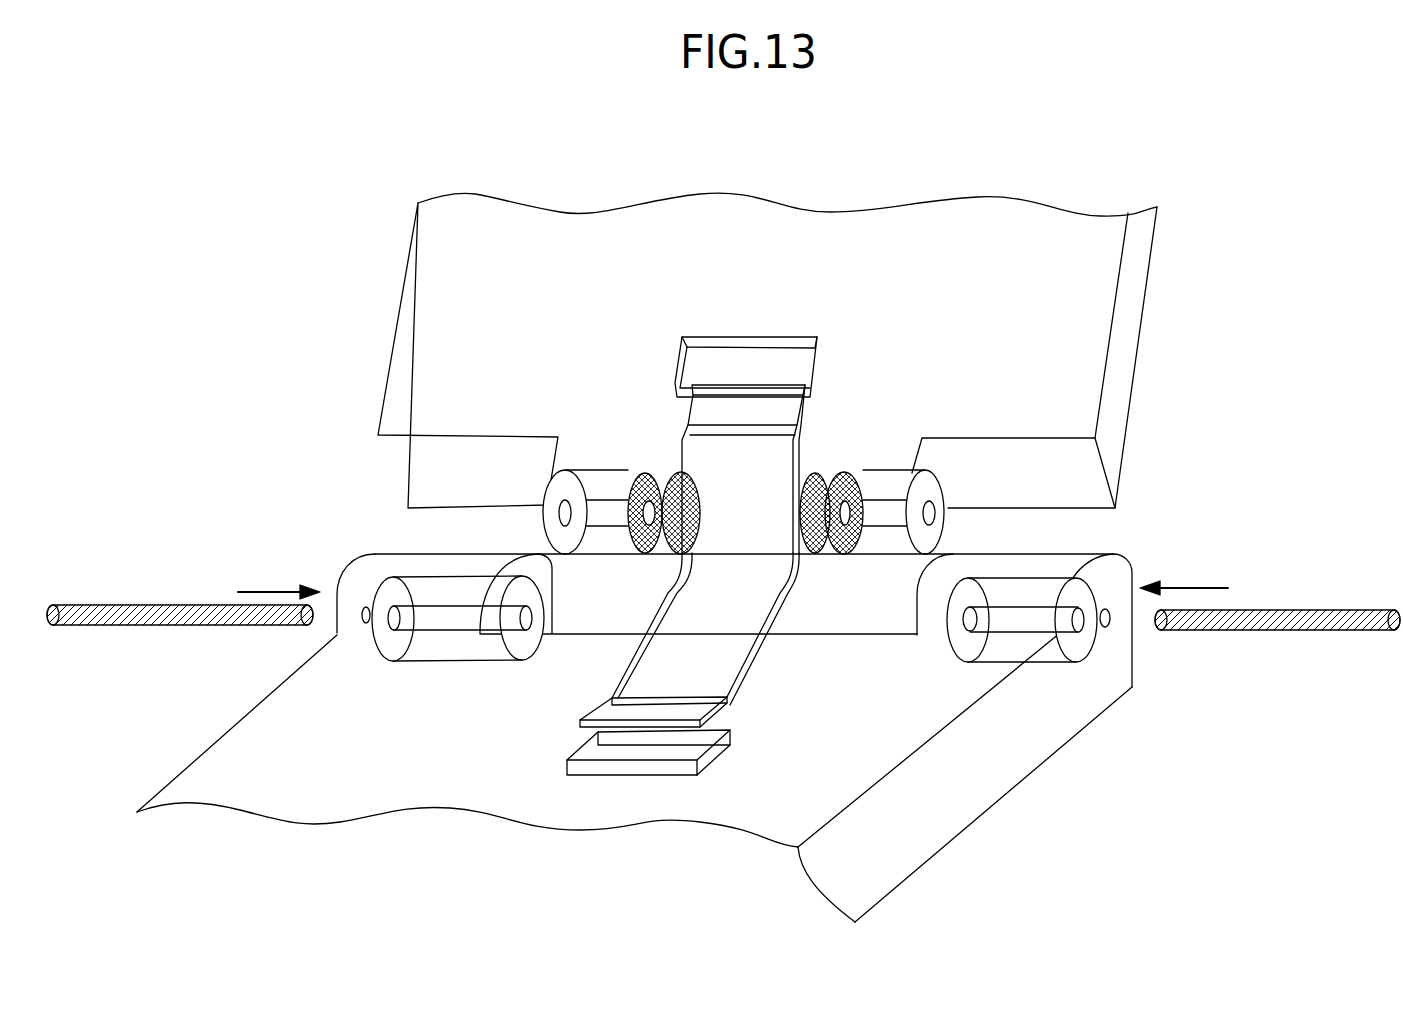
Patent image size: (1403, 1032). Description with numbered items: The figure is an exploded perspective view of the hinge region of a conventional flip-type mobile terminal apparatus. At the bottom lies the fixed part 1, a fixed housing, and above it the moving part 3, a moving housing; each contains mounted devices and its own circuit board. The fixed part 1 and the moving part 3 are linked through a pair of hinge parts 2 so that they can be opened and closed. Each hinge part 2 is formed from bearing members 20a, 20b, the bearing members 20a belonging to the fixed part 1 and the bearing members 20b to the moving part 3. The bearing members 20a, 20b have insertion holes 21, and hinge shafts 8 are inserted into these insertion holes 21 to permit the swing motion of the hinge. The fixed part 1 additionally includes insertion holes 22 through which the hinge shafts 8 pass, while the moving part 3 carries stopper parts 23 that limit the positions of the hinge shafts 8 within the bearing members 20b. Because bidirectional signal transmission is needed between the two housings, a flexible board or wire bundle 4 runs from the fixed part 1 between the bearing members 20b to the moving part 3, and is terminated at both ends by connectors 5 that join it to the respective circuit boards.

The fixed part 1 is at (823, 773).
The hinge parts 2 is at (355, 526).
The moving part 3 is at (1080, 308).
The flexible board or wire bundle 4 is at (717, 452).
The connectors 5 is at (820, 367).
The hinge shafts 8 is at (173, 603).
The bearing members 20a is at (460, 645).
The bearing members 20b is at (608, 485).
The insertion holes 21 is at (930, 508).
The insertion holes 22 is at (358, 616).
The stopper parts 23 is at (648, 555).